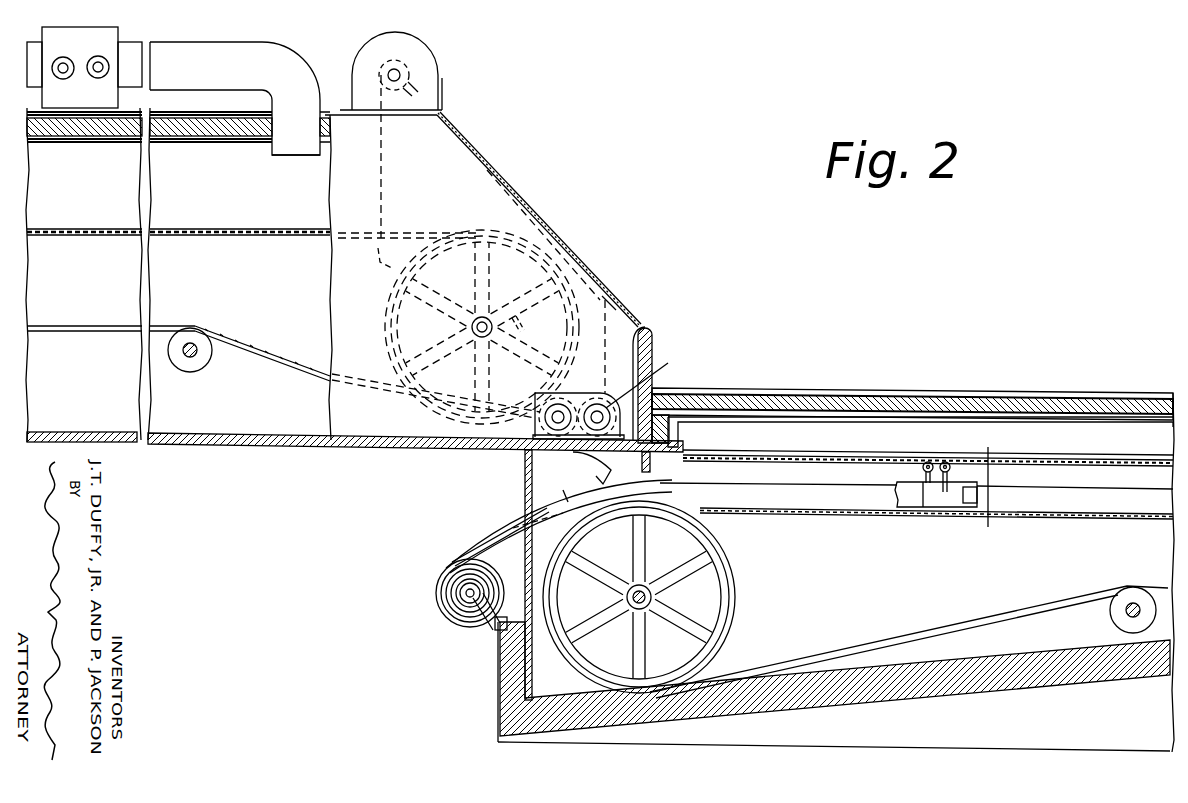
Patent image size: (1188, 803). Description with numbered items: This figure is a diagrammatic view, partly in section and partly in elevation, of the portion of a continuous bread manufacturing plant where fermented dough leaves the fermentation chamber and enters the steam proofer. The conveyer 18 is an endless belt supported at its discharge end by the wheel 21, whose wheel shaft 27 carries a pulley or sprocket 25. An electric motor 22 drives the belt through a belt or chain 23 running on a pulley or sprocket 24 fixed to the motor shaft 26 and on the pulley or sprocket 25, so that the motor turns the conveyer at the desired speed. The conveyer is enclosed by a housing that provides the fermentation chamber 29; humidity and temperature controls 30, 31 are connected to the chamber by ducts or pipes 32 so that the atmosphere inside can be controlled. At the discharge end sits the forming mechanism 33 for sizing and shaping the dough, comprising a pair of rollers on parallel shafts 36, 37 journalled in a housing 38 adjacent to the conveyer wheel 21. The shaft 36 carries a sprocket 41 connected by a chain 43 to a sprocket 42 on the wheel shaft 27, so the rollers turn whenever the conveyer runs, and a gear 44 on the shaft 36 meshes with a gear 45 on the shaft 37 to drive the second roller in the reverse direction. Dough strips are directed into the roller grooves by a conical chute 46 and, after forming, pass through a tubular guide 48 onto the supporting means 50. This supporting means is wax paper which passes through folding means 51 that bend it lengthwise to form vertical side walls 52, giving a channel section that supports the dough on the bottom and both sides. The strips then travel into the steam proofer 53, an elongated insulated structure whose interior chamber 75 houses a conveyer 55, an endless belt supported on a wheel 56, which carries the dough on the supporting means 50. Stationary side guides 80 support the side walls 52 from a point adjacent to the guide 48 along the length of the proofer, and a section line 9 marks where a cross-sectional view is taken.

The section line 9- 9 is at (989, 490).
The conveyer 18 is at (106, 226).
The wheel 21 is at (538, 262).
The electric motor 22 is at (424, 62).
The belt or chain 23 is at (524, 199).
The pulley or sprocket 24 is at (412, 98).
The pulley or sprocket 25 is at (396, 278).
The motor shaft 26 is at (396, 136).
The wheel shaft 27 is at (478, 338).
The fermentation chamber 29 is at (291, 173).
The humidity control 30 is at (72, 68).
The temperature control 31 is at (111, 75).
The ducts or pipes 32 is at (235, 98).
The forming mechanism 33 is at (652, 352).
The shaft 36 is at (535, 427).
The shaft 37 is at (658, 370).
The housing 38 is at (590, 393).
The sprocket 41 is at (585, 375).
The sprocket 42 is at (464, 304).
The chain 43 is at (522, 334).
The gear 44 is at (829, 600).
The gear 45 is at (672, 432).
The chute 46 is at (612, 300).
The tubular guide 48 is at (585, 474).
The supporting means 50 is at (756, 500).
The folding means 51 is at (546, 510).
The vertical side walls 52 is at (755, 496).
The steam proofer 53 is at (1101, 393).
The conveyer 55 is at (1060, 514).
The wheel 56 is at (735, 596).
The chamber 75 is at (1128, 572).
The stationary side guide 80 is at (917, 497).